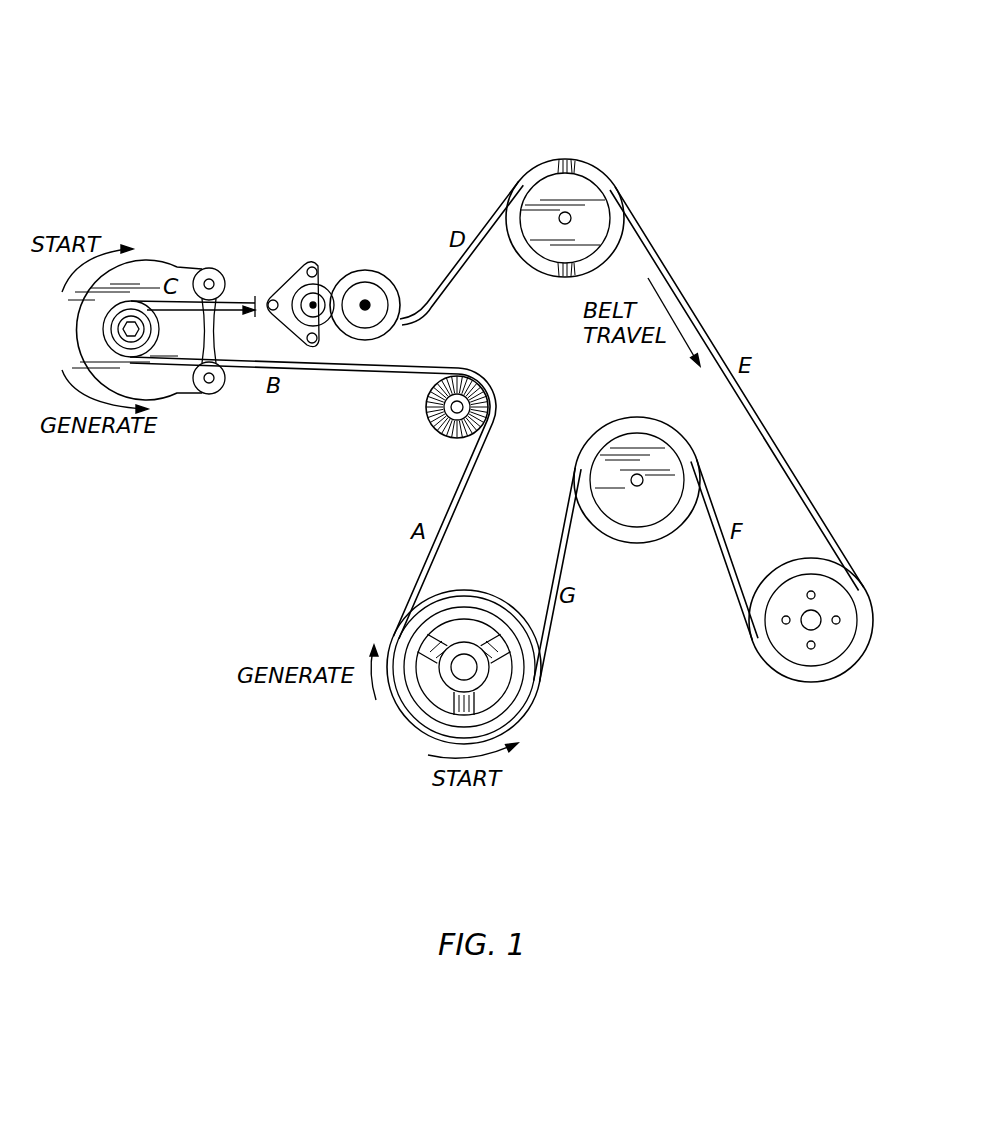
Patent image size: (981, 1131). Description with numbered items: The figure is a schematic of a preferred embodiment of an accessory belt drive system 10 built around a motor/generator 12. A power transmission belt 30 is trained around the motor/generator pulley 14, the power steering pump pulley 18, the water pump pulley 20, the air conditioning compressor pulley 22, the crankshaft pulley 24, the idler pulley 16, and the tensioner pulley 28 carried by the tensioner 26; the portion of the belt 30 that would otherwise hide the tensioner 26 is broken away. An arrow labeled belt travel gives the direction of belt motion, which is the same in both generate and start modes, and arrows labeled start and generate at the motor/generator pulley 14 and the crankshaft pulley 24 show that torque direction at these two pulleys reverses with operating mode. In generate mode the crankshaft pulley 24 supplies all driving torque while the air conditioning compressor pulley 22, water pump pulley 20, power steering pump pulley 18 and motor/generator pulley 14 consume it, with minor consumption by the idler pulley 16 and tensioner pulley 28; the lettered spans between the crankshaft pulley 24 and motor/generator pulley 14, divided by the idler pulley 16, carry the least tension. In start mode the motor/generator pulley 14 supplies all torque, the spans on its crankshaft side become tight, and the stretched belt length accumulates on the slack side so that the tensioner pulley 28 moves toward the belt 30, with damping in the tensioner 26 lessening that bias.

The accessory belt drive system 10 is at (745, 85).
The motor/generator 12 is at (186, 394).
The motor/generator pulley 14 is at (187, 307).
The idler pulley 16 is at (455, 377).
The power steering pump pulley 18 is at (600, 163).
The water pump pulley 20 is at (852, 668).
The air conditioning compressor pulley 22 is at (687, 515).
The crankshaft pulley 24 is at (517, 722).
The tensioner 26 is at (286, 237).
The tensioner pulley 28 is at (366, 270).
The power transmission belt 30 is at (790, 460).